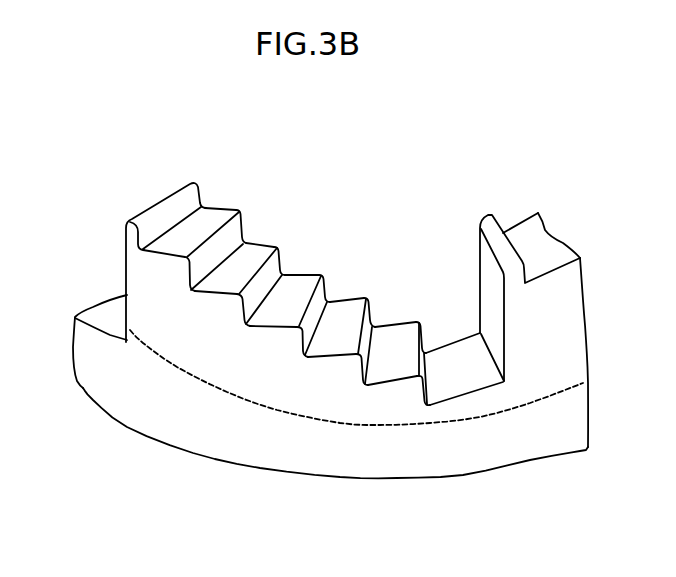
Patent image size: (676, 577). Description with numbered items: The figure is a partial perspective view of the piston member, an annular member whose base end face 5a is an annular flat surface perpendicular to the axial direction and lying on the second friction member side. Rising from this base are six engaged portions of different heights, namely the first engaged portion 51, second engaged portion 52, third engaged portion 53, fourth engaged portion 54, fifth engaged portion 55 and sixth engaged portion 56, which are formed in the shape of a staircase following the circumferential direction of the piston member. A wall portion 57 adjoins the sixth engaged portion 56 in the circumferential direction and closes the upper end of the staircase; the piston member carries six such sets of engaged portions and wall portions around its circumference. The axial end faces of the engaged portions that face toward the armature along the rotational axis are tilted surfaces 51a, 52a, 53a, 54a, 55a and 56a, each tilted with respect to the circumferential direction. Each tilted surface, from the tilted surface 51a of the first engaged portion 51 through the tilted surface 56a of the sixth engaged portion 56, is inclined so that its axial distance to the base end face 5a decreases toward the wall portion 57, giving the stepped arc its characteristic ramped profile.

The base end face 5a is at (237, 424).
The wall portion 57 is at (134, 217).
The sixth engaged portion 56 is at (213, 186).
The tilted surface 56a is at (206, 216).
The fifth engaged portion 55 is at (256, 221).
The tilted surface 55a is at (250, 254).
The fourth engaged portion 54 is at (302, 248).
The tilted surface 54a is at (295, 284).
The third engaged portion 53 is at (352, 273).
The tilted surface 53a is at (343, 310).
The second engaged portion 52 is at (402, 293).
The tilted surface 52a is at (395, 328).
The first engaged portion 51 is at (464, 297).
The tilted surface 51a is at (453, 348).